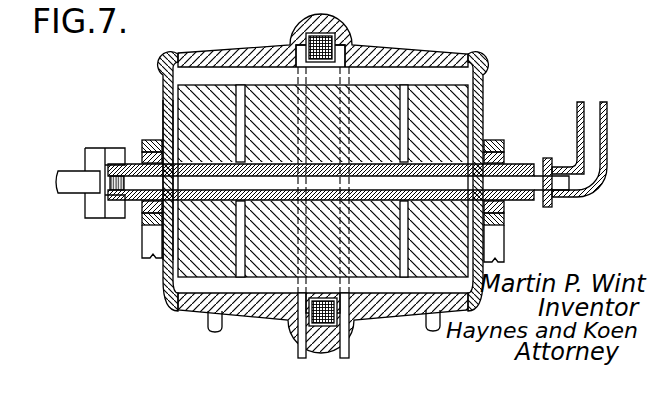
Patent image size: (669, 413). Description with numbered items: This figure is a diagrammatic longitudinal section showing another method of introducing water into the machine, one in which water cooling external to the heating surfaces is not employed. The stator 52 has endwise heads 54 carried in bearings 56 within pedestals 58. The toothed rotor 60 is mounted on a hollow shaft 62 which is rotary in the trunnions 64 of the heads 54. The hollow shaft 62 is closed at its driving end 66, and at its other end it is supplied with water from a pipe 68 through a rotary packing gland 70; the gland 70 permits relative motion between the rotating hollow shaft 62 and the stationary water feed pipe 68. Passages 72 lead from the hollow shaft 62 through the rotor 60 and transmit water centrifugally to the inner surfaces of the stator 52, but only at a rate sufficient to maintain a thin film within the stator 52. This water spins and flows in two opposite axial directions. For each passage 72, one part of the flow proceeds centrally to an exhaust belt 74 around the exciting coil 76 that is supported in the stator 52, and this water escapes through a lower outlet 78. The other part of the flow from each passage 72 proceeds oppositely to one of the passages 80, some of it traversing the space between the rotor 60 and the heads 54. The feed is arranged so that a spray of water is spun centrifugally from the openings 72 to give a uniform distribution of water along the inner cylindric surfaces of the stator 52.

The stator 52 is at (405, 45).
The endwise heads 54 is at (160, 100).
The bearings 56 is at (142, 147).
The pedestals 58 is at (142, 253).
The toothed rotor 60 is at (195, 257).
The hollow shaft 62 is at (167, 133).
The trunnions 64 is at (143, 203).
The closed driving end 66 is at (113, 186).
The water feed pipe 68 is at (592, 150).
The rotary packing gland 70 is at (558, 195).
The passages 72 is at (240, 262).
The exhaust belt 74 is at (302, 57).
The exciting coil 76 is at (328, 43).
The lower outlet 78 is at (304, 346).
The passages 80 is at (213, 318).